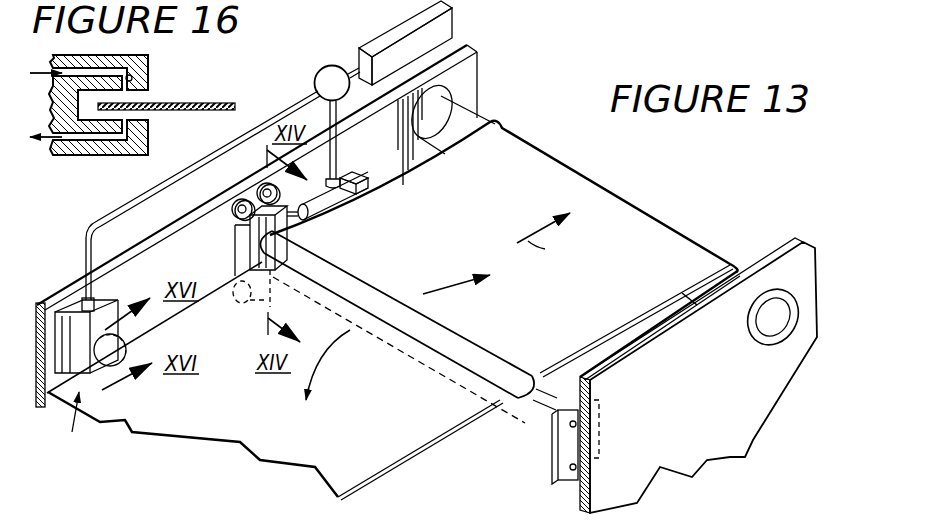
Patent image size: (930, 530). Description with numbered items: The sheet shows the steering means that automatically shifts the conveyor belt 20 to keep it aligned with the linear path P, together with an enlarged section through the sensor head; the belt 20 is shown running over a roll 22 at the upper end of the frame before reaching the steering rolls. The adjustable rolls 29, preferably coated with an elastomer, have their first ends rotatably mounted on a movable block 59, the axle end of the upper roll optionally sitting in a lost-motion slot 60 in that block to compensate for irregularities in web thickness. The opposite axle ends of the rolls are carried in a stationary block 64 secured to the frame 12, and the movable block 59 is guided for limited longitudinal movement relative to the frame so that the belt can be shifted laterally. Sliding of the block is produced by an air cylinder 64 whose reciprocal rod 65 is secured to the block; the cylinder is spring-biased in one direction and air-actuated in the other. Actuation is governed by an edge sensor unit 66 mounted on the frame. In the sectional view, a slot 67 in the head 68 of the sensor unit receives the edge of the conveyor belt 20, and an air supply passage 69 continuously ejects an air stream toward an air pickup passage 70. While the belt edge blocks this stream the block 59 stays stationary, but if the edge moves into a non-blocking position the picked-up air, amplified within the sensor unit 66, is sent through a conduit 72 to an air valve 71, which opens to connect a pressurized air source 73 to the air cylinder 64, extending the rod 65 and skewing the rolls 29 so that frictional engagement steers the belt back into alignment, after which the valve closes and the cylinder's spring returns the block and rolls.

In FIG. 13, the frame 12 is at (68, 282).
In FIG. 16, the conveyor belt 20 is at (205, 103).
In FIG. 13, the conveyor belt 20 is at (622, 208).
In FIG. 13, the roll 22 is at (465, 129).
In FIG. 13, the adjustable rolls 29 is at (524, 412).
In FIG. 13, the movable block 59 is at (234, 243).
In FIG. 13, the lost-motion slot 60 is at (288, 223).
In FIG. 13, the air cylinder 64 is at (345, 203).
In FIG. 13, the reciprocal rod 65 is at (302, 223).
In FIG. 13, the edge sensor unit 66 is at (66, 426).
In FIG. 16, the slot 67 is at (138, 93).
In FIG. 16, the head 68 is at (118, 155).
In FIG. 13, the head 68 is at (124, 341).
In FIG. 16, the air supply passage 69 is at (133, 77).
In FIG. 16, the air pickup passage 70 is at (126, 118).
In FIG. 13, the air valve 71 is at (323, 70).
In FIG. 13, the conduit 72 is at (156, 190).
In FIG. 13, the pressurized air source 73 is at (383, 44).